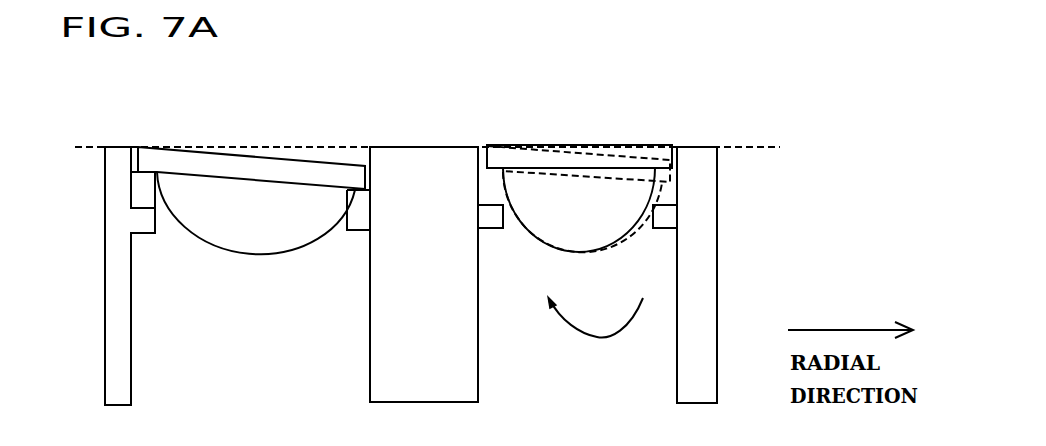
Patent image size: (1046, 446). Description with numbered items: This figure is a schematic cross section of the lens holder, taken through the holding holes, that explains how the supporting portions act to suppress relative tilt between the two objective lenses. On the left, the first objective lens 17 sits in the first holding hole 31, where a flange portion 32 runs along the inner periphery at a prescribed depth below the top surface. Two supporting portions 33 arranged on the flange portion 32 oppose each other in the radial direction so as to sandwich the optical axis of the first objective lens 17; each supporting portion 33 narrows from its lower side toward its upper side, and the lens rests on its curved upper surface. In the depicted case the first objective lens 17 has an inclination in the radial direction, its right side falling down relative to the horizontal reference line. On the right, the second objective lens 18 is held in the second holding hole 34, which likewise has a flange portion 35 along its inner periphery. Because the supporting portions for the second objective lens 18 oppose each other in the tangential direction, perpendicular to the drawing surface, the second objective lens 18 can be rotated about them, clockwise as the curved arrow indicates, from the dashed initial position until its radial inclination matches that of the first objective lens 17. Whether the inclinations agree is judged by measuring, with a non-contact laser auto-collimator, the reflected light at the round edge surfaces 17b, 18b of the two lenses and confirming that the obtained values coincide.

The first objective lens 17 is at (253, 163).
The round edge surface of the first objective lens 17b is at (160, 139).
The second objective lens 18 is at (637, 152).
The round edge surface of the second objective lens 18b is at (505, 140).
The first holding hole 31 is at (317, 145).
The flange portion 32 is at (147, 233).
The supporting portion 33 is at (143, 193).
The second holding hole 34 is at (585, 135).
The flange portion 35 is at (492, 218).